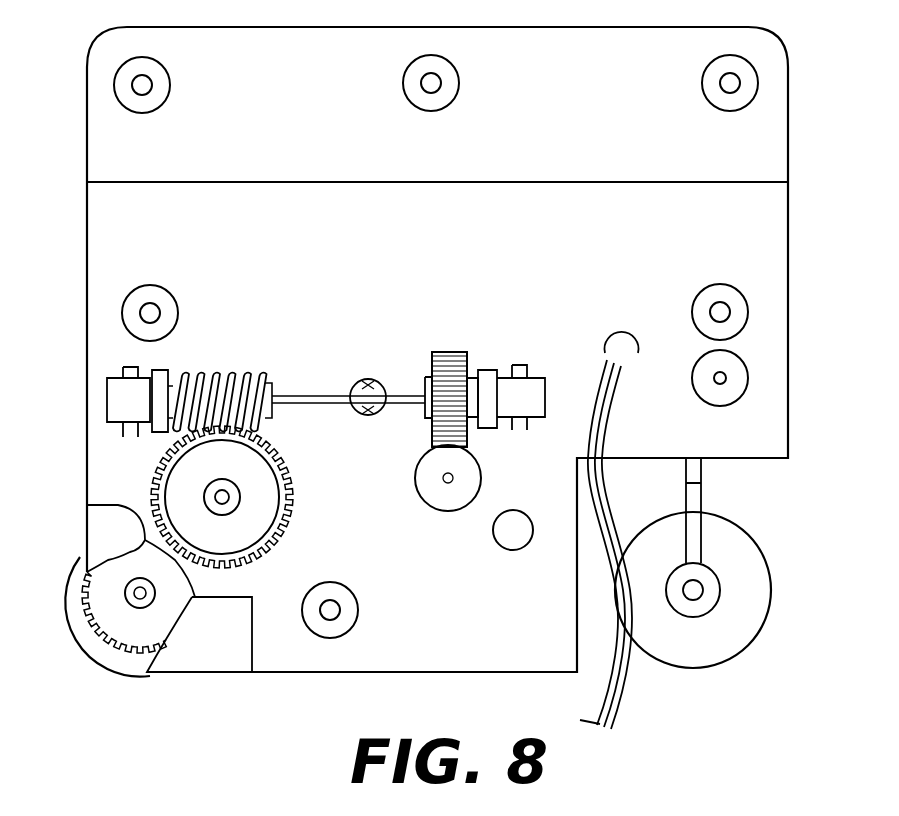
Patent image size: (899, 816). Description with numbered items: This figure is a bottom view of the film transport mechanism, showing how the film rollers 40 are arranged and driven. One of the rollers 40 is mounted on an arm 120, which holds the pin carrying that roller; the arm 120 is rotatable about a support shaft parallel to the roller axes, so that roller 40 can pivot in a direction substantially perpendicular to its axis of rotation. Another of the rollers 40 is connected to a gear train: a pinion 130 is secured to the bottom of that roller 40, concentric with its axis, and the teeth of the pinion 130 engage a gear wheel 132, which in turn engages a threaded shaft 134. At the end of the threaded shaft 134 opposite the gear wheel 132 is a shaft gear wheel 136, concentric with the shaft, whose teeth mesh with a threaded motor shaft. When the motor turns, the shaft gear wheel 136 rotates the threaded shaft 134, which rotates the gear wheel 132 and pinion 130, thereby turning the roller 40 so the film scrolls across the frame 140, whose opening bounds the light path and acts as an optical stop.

The roller 40 is at (80, 558).
The arm 120 is at (695, 492).
The pinion 130 is at (120, 615).
The gear wheel 132 is at (263, 517).
The threaded shaft 134 is at (245, 370).
The shaft gear wheel 136 is at (448, 352).
The frame 140 is at (772, 583).